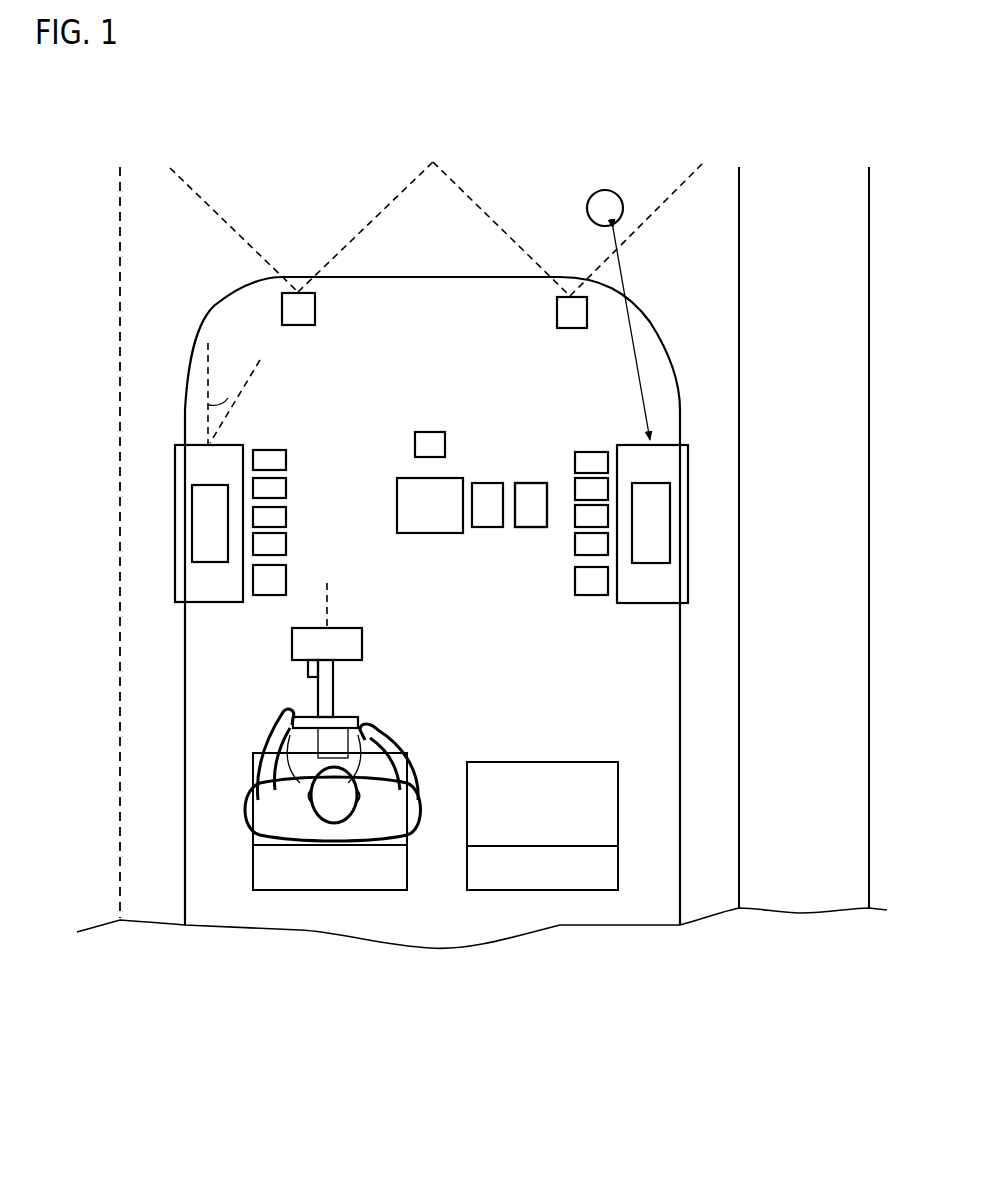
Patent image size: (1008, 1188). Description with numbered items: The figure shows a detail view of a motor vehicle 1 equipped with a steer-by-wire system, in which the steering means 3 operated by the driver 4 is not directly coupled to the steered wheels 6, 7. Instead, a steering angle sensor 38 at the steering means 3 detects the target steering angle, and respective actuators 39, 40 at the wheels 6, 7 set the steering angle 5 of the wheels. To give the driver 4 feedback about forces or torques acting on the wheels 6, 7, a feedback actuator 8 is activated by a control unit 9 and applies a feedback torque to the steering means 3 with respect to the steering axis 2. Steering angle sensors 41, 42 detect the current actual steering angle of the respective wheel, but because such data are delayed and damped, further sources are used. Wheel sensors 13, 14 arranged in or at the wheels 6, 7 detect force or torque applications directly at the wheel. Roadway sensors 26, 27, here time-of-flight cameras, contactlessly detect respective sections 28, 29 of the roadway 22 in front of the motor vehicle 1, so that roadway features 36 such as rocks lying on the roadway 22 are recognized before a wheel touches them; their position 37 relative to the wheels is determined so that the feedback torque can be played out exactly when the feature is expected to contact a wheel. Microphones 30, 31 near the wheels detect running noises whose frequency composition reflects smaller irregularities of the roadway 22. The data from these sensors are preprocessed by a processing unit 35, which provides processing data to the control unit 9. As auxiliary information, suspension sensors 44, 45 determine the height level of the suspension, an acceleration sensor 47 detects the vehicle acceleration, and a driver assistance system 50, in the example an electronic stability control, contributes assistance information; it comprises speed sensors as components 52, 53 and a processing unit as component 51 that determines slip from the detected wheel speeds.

The motor vehicle 1 is at (680, 847).
The steering axis 2 is at (332, 603).
The steering means 3 is at (340, 720).
The driver 4 is at (383, 805).
The steering angle 5 is at (217, 422).
The steered wheel 6 is at (175, 587).
The steered wheel 7 is at (688, 575).
The feedback actuator 8 is at (357, 647).
The control unit 9 is at (418, 533).
The wheel sensor 13 is at (204, 527).
The wheel sensor 14 is at (670, 510).
The roadway 22 is at (678, 252).
The roadway sensor 26 is at (315, 308).
The roadway sensor 27 is at (557, 311).
The section of the roadway 28 is at (353, 183).
The section of the roadway 29 is at (656, 207).
The microphone 30 is at (286, 460).
The microphone 31 is at (575, 462).
The processing unit 35 is at (487, 527).
The roadway feature 36 is at (624, 204).
The position 37 is at (623, 287).
The steering angle sensor 38 is at (307, 672).
The actuator 39 is at (286, 580).
The actuator 40 is at (590, 595).
The steering angle sensor 41 is at (286, 544).
The steering angle sensor 42 is at (575, 545).
The suspension sensor 44 is at (286, 517).
The suspension sensor 45 is at (575, 517).
The acceleration sensor 47 is at (445, 444).
The driver assistance system 50 is at (530, 527).
The component 51 is at (531, 505).
The component 52 is at (286, 488).
The component 53 is at (575, 490).